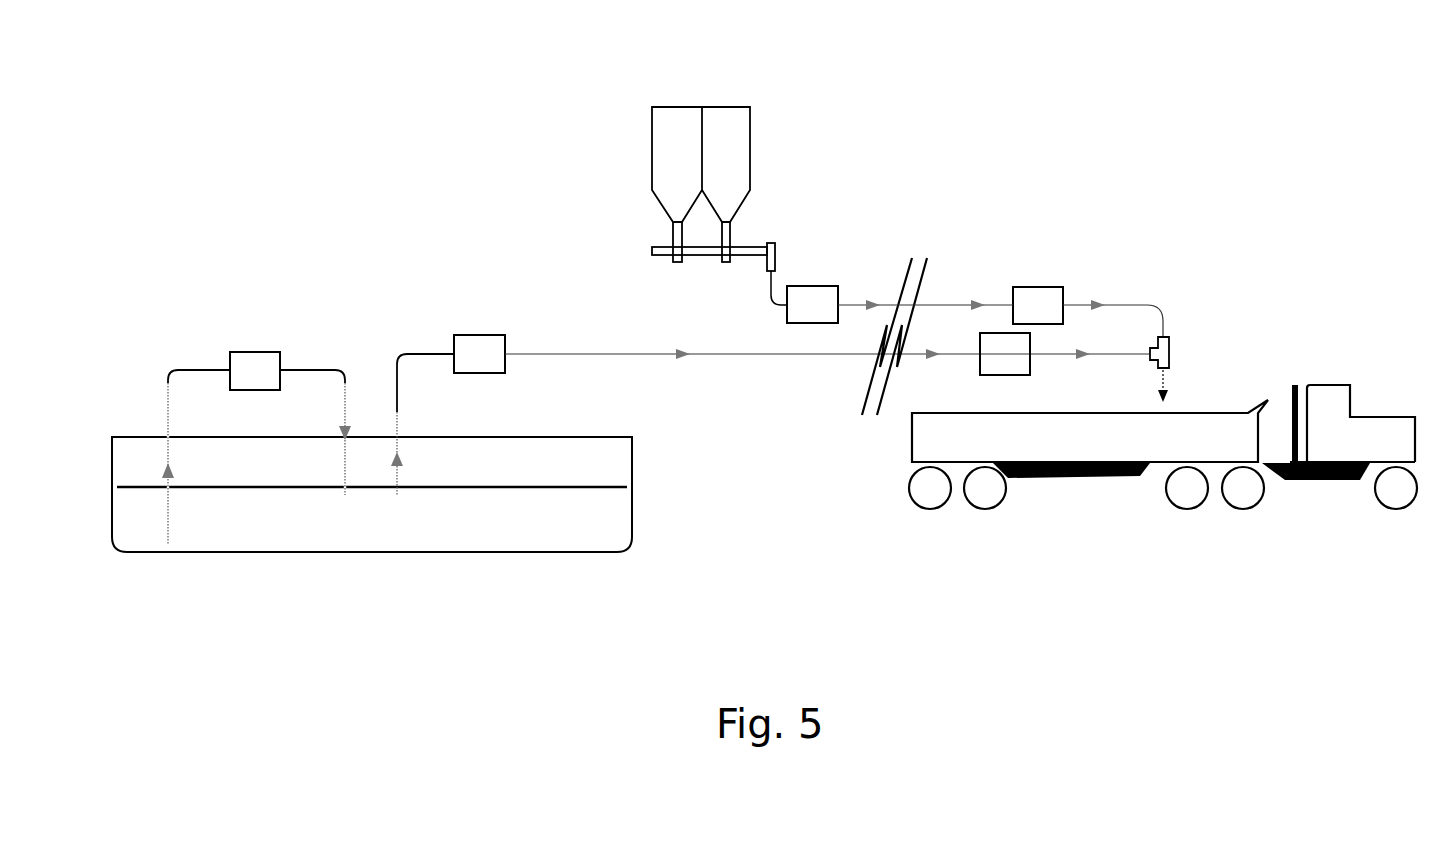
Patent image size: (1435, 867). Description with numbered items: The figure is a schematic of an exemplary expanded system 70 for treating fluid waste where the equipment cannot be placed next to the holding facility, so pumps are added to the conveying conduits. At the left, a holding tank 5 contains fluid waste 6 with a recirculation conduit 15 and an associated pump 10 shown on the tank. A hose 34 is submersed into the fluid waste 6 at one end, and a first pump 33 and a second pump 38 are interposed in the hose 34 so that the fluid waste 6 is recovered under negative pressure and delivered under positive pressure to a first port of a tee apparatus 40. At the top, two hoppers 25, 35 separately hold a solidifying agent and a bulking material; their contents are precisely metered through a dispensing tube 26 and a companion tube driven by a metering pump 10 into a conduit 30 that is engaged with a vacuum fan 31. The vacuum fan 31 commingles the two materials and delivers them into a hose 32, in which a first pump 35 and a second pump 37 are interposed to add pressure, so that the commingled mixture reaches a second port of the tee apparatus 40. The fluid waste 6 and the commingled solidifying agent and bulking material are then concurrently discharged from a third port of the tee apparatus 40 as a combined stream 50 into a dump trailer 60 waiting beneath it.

The fluid tank 5 is at (587, 437).
The fluid waste 6 is at (480, 512).
The pump 10 is at (242, 352).
The recirculation conduit 15 is at (314, 370).
The hopper 25 is at (652, 130).
The dispensing tube 26 is at (672, 230).
The conduit 30 is at (707, 258).
The vacuum fan 31 is at (780, 255).
The hose 32 is at (1107, 303).
The first pump 33 is at (490, 335).
The hose 34 is at (550, 353).
The hopper / first pump 35 is at (750, 122).
The second pump 37 is at (1025, 287).
The second pump 38 is at (980, 372).
The tee apparatus 40 is at (1170, 352).
The concurrently discharged fluid waste and commingled solidifying agent and bulking 50 is at (1180, 375).
The dump trailer 60 is at (1240, 390).
The expanded system 70 is at (978, 106).